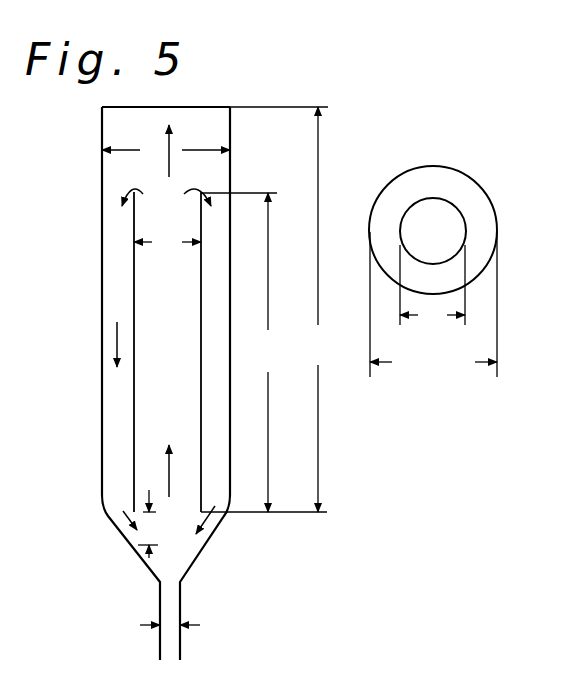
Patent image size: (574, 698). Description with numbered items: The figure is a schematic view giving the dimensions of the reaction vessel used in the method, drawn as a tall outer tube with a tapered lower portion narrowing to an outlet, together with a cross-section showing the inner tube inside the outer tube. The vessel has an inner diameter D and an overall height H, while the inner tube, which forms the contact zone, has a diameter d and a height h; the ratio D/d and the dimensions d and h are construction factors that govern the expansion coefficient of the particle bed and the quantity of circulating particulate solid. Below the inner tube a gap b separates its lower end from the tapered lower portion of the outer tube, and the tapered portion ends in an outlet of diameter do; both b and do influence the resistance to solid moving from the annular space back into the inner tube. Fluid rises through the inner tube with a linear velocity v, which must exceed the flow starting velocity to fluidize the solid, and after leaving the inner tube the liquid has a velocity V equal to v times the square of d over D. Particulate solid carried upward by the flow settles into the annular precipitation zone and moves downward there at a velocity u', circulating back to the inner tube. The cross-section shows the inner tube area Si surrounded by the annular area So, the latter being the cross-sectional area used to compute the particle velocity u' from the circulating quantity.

The inner diameter of the reaction vessel D is at (299, 259).
The linear velocity of the liquid after passage through the inner tube V is at (178, 155).
The inner tube diameter d is at (299, 280).
The moving velocity of the particles within the annular space u' is at (115, 333).
The height of the inner tube h is at (239, 352).
The height of the reaction vessel H is at (264, 309).
The linear velocity of the fluid within the inner tube v is at (176, 471).
The gap between the lower end of the inner tube and the tapered lower portion b is at (148, 524).
The outlet diameter do is at (170, 626).
The cross-sectional area of the inner tube Si is at (433, 231).
The cross-sectional area of the annular space So is at (433, 230).